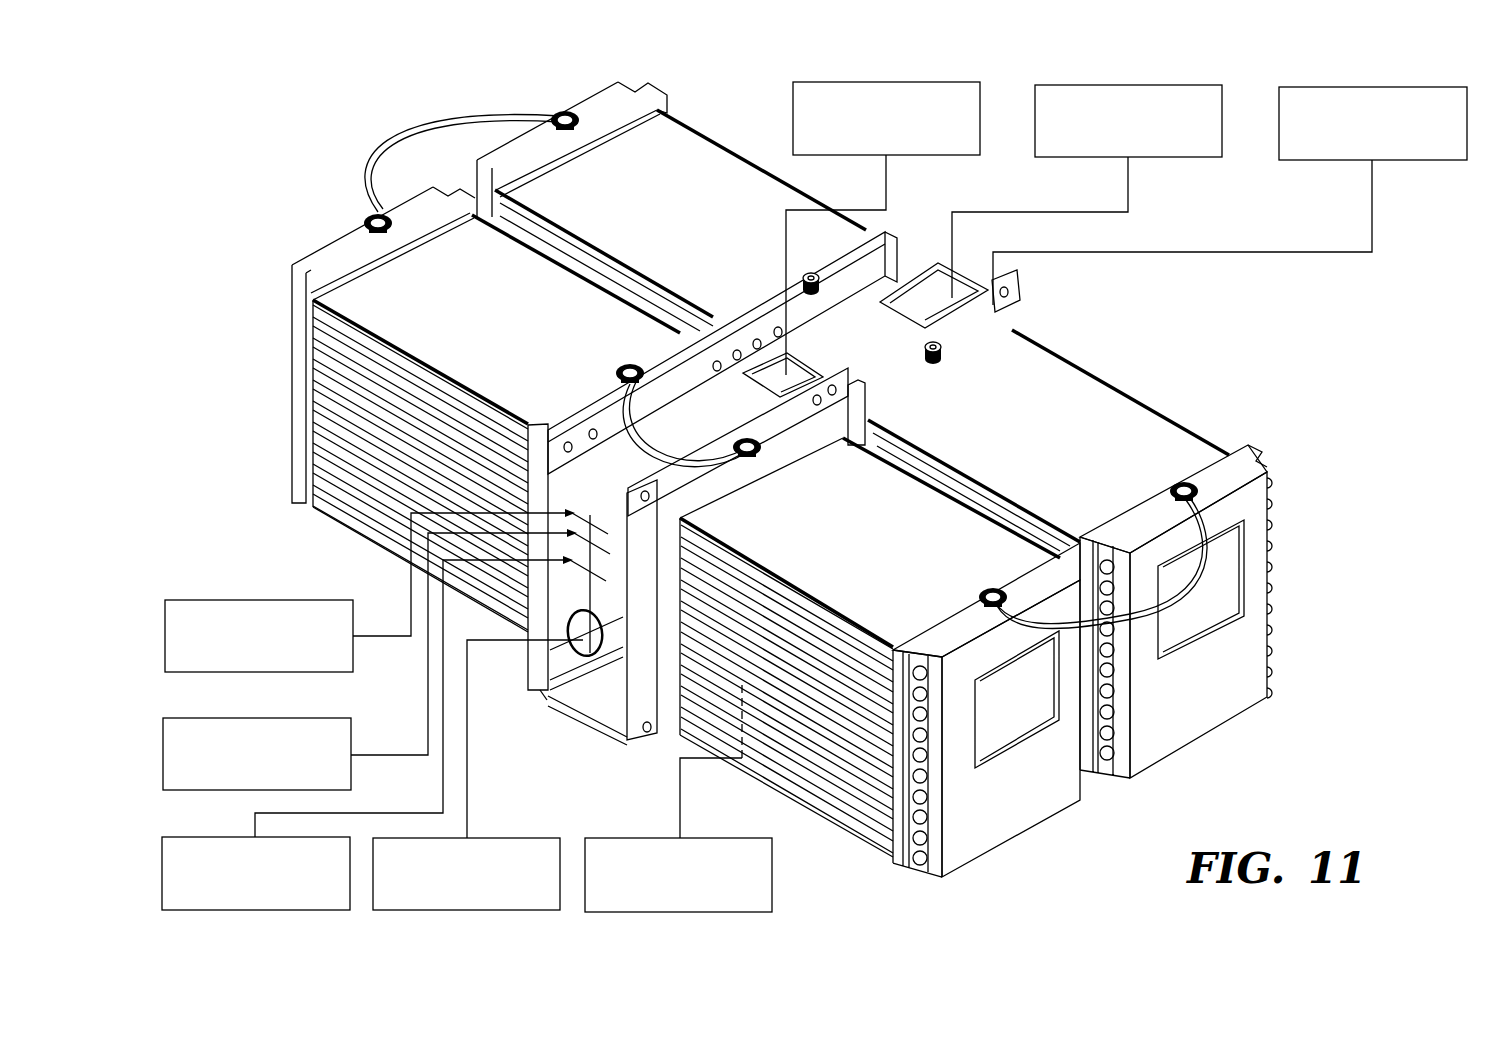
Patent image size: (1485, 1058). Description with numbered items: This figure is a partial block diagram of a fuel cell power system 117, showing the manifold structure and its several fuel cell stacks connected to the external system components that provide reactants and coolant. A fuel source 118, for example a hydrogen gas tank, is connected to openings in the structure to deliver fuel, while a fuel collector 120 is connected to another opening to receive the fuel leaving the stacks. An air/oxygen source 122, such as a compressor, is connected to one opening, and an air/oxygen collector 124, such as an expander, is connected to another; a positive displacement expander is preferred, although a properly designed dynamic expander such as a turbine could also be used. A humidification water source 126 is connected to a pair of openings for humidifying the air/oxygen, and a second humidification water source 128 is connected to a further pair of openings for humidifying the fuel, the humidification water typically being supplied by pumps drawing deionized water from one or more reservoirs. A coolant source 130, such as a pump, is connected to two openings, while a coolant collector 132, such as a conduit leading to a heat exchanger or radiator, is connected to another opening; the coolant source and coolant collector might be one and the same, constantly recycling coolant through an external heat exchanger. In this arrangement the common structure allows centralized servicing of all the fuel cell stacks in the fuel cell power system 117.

The fuel cell power system 117 is at (248, 245).
The fuel source 118 is at (1420, 147).
The fuel collector 120 is at (764, 860).
The air/oxygen source 122 is at (937, 142).
The air/oxygen collector 124 is at (1178, 143).
The humidification water source 126 is at (181, 608).
The humidification water source 128 is at (180, 730).
The coolant source 130 is at (179, 852).
The coolant collector 132 is at (551, 857).